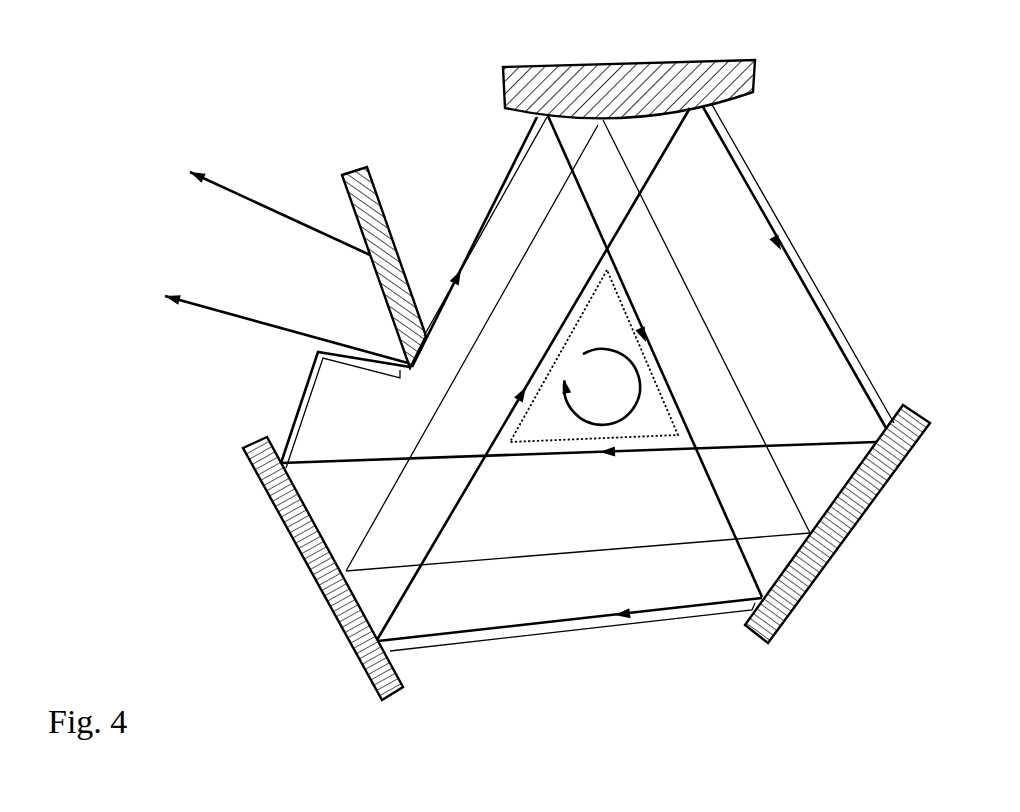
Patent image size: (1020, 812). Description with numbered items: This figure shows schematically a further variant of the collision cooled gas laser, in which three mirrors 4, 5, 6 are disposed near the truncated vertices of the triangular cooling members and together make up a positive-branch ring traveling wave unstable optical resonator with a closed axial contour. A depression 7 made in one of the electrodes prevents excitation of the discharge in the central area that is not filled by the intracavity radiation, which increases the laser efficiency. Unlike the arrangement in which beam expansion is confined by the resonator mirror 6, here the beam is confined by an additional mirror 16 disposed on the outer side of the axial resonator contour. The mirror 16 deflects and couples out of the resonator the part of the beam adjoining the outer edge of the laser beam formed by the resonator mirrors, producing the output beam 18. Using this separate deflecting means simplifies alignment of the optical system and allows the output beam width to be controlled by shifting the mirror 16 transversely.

The mirror 4 is at (640, 65).
The mirror 5 is at (840, 548).
The mirror 6 is at (313, 567).
The depression 7 is at (661, 289).
The mirror 16 is at (357, 167).
The output beam 18 is at (241, 268).